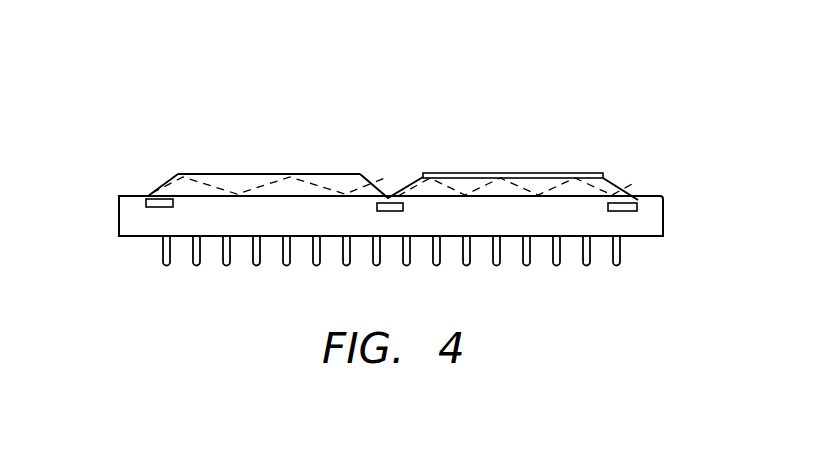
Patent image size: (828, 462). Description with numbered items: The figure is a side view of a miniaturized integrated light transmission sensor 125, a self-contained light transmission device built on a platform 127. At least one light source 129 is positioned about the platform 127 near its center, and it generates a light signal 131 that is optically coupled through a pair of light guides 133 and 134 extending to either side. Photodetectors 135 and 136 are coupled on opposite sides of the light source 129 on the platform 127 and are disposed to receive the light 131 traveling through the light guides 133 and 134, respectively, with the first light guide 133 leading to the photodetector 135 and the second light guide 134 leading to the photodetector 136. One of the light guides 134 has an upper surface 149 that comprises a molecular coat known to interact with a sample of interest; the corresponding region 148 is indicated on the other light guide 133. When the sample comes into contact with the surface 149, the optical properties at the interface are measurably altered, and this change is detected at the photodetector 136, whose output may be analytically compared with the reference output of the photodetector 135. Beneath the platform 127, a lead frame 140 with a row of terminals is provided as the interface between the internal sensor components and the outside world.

The miniaturized light transmission sensor 125 is at (557, 76).
The platform 127 is at (118, 221).
The light source 129 is at (388, 197).
The light signal 131 is at (343, 188).
The light guide 133 is at (243, 180).
The light guide 134 is at (540, 185).
The photodetector 135 is at (157, 207).
The photodetector 136 is at (626, 211).
The lead frame 140 is at (623, 271).
The left plate inclined edge 148 is at (183, 174).
The upper surface 149 is at (590, 175).